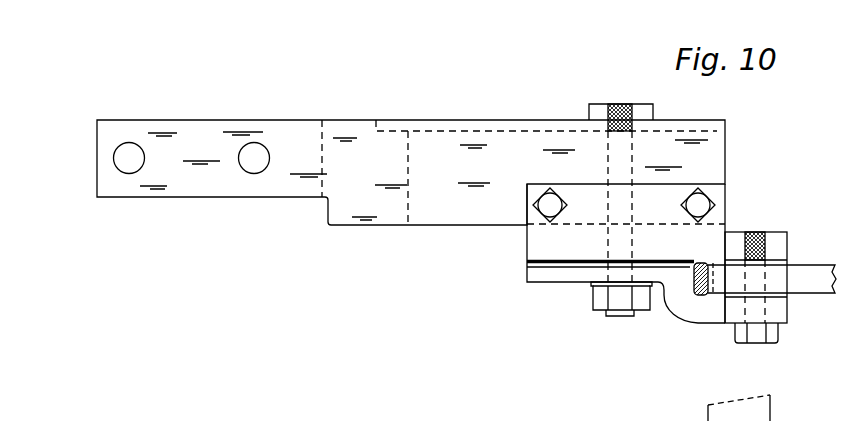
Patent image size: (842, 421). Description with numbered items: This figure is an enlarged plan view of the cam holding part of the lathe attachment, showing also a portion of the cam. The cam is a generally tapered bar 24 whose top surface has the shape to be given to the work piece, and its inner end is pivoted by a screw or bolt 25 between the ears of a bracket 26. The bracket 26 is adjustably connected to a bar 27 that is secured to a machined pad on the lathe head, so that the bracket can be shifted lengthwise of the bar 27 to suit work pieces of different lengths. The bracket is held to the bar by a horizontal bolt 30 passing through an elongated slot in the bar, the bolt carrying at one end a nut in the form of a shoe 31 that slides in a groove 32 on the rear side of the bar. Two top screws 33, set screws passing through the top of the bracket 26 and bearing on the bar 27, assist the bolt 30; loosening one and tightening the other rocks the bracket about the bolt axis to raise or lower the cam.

The tapered bar 24 is at (815, 270).
The screw or bolt 25 is at (776, 335).
The bracket 26 is at (542, 281).
The bar 27 is at (305, 128).
The horizontal bolt 30 is at (618, 313).
The shoe 31 is at (592, 104).
The groove 32 is at (448, 128).
The top screws 33 is at (548, 206).